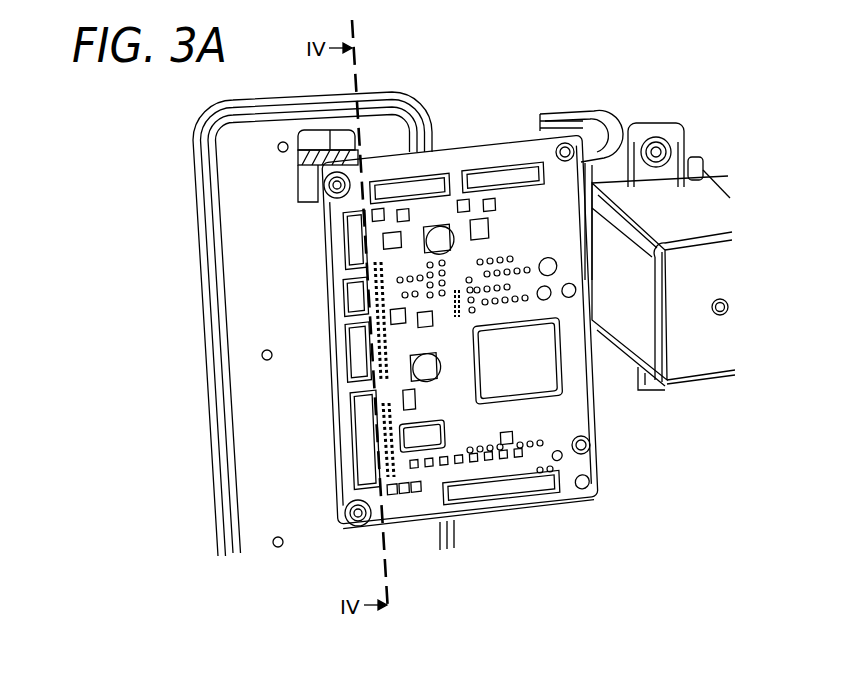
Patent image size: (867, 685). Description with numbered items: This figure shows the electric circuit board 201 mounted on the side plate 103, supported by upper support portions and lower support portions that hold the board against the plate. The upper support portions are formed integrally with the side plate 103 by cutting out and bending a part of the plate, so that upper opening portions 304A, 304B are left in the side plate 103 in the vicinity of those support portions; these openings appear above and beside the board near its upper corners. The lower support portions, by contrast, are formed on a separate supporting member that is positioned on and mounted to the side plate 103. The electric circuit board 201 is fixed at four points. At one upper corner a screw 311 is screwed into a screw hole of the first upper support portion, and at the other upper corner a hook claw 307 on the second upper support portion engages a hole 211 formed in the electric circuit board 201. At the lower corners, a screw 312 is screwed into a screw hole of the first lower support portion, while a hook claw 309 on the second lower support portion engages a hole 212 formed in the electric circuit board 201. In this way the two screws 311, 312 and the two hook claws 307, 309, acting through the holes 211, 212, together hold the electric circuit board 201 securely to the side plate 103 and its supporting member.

The side plate 103 is at (436, 57).
The electric circuit board 201 is at (452, 150).
The hole 211 is at (563, 152).
The hole 212 is at (575, 440).
The upper opening portion 304A is at (307, 176).
The upper opening portion 304B is at (612, 130).
The hook claw 307 is at (567, 147).
The hook claw 309 is at (587, 447).
The screw 311 is at (337, 193).
The screw 312 is at (352, 512).